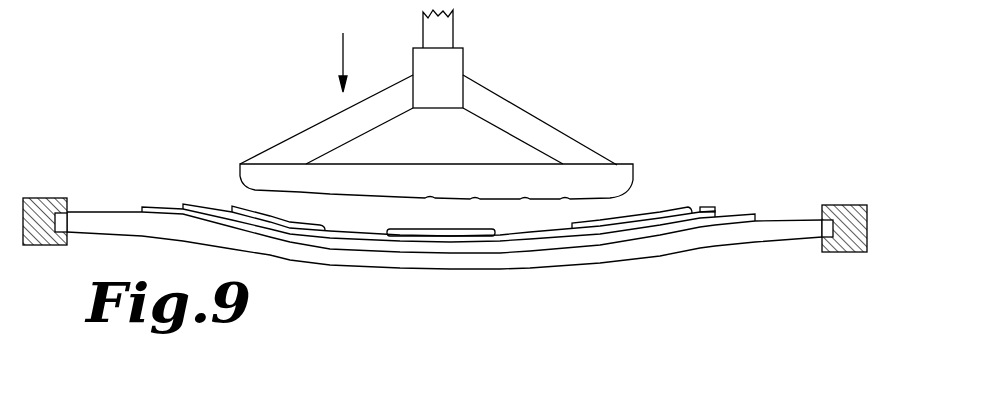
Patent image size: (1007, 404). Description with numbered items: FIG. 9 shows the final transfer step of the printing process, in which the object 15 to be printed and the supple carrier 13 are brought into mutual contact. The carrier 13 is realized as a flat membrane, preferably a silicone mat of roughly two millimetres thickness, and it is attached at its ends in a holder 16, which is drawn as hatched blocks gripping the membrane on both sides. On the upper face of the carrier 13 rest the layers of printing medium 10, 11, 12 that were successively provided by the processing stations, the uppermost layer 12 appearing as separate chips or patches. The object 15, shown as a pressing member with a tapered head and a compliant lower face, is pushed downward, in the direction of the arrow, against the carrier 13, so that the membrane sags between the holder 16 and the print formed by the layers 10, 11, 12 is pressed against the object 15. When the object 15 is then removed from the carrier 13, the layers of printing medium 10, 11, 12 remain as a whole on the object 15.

The layer of printing medium 10 is at (740, 218).
The layer of printing medium 11 is at (700, 212).
The layer of printing medium 12 is at (243, 212).
The supple carrier 13 is at (586, 262).
The object to be printed 15 is at (590, 180).
The holder 16 is at (833, 205).